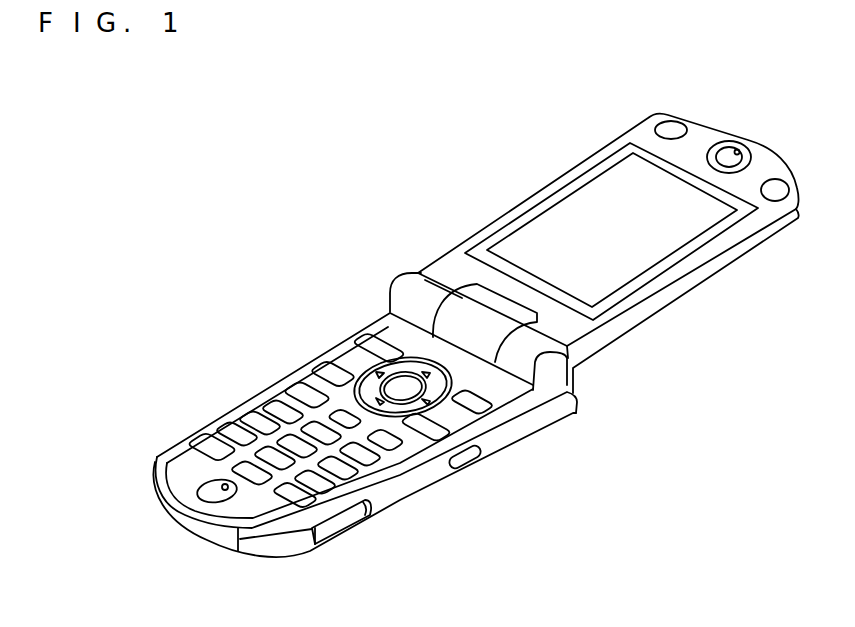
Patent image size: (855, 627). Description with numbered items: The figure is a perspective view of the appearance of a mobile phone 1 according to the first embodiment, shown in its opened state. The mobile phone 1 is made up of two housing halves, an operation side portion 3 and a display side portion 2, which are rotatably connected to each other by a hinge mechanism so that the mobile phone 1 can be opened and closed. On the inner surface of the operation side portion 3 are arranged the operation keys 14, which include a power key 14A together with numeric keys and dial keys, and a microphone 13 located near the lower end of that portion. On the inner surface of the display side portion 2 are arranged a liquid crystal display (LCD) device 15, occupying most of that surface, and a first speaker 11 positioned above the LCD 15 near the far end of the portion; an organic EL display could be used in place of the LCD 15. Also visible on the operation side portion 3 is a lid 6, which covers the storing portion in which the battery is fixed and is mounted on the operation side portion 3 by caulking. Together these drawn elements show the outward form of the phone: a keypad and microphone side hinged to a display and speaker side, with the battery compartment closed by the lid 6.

The mobile phone 1 is at (239, 138).
The display side portion 2 is at (677, 292).
The operation side portion 3 is at (530, 430).
The lid 6 is at (357, 528).
The first speaker 11 is at (736, 152).
The microphone 13 is at (207, 483).
The operation keys 14 is at (334, 430).
The power key 14A is at (397, 443).
The liquid crystal display (LCD) device 15 is at (568, 212).